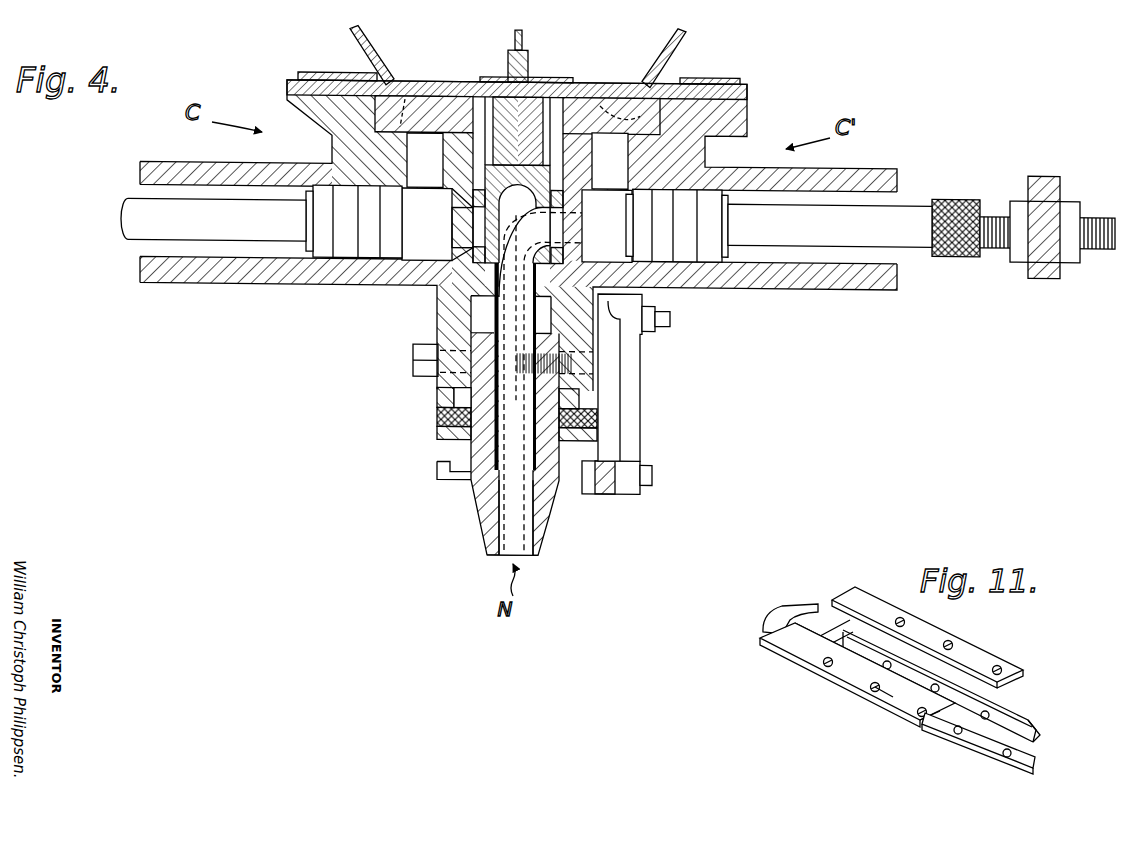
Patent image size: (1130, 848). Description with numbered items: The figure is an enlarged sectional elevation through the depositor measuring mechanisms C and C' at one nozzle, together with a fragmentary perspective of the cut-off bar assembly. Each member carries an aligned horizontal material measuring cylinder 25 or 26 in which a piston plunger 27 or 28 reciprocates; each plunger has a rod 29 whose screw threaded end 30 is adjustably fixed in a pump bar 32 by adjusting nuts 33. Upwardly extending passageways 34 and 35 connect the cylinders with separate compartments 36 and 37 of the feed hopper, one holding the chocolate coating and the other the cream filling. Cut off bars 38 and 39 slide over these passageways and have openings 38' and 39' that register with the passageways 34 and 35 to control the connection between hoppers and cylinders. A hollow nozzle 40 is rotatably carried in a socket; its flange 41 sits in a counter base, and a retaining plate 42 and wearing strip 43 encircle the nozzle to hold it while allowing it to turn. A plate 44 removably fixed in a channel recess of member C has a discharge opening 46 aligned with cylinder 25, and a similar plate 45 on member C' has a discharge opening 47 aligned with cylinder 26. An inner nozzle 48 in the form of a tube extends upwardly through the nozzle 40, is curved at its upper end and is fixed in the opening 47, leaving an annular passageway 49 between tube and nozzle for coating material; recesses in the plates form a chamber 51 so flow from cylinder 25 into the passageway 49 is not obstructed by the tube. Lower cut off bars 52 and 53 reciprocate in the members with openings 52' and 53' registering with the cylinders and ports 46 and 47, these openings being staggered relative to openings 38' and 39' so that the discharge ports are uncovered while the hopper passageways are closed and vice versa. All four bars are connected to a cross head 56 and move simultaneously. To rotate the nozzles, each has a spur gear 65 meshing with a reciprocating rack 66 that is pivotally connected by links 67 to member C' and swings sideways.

In FIG. 4, the material measuring cylinder 25 is at (437, 224).
In FIG. 4, the material measuring cylinder 26 is at (607, 226).
In FIG. 4, the piston plunger 27 is at (354, 221).
In FIG. 4, the piston plunger 28 is at (677, 225).
In FIG. 4, the rod 29 is at (526, 222).
In FIG. 4, the screw threaded end 30 is at (1097, 250).
In FIG. 4, the pump bar 32 is at (1040, 178).
In FIG. 4, the adjusting nut 33 is at (1070, 262).
In FIG. 4, the passageway 34 is at (425, 160).
In FIG. 4, the passageway 35 is at (610, 161).
In FIG. 4, the compartment 36 is at (440, 82).
In FIG. 4, the compartment 37 is at (640, 104).
In FIG. 4, the cut off bar 38 is at (411, 79).
In FIG. 11, the cut off bar 38 is at (856, 675).
In FIG. 4, the opening 38' is at (400, 84).
In FIG. 11, the opening 38' is at (851, 711).
In FIG. 4, the cut off bar 39 is at (622, 61).
In FIG. 11, the cut off bar 39 is at (927, 637).
In FIG. 4, the opening 39' is at (624, 86).
In FIG. 11, the opening 39' is at (1020, 654).
In FIG. 4, the hollow nozzle 40 is at (482, 537).
In FIG. 4, the flange 41 is at (444, 397).
In FIG. 4, the retaining plate 42 is at (440, 440).
In FIG. 4, the wearing strip 43 is at (440, 418).
In FIG. 4, the plate 44 is at (500, 152).
In FIG. 4, the plate 45 is at (536, 152).
In FIG. 4, the discharge opening 46 is at (462, 232).
In FIG. 4, the discharge opening 47 is at (562, 239).
In FIG. 4, the inner nozzle 48 is at (516, 530).
In FIG. 4, the annular passageway 49 is at (530, 557).
In FIG. 4, the chamber 51 is at (517, 226).
In FIG. 4, the cut off bar 52 is at (437, 288).
In FIG. 11, the cut off bar 52 is at (965, 743).
In FIG. 4, the opening 52' is at (452, 199).
In FIG. 11, the opening 52' is at (981, 766).
In FIG. 4, the cut off bar 53 is at (631, 281).
In FIG. 11, the cut off bar 53 is at (921, 682).
In FIG. 4, the opening 53' is at (585, 203).
In FIG. 11, the opening 53' is at (1048, 719).
In FIG. 11, the cross head 56 is at (785, 607).
In FIG. 4, the spur gear 65 is at (445, 481).
In FIG. 4, the reciprocating rack 66 is at (598, 494).
In FIG. 4, the link 67 is at (632, 395).